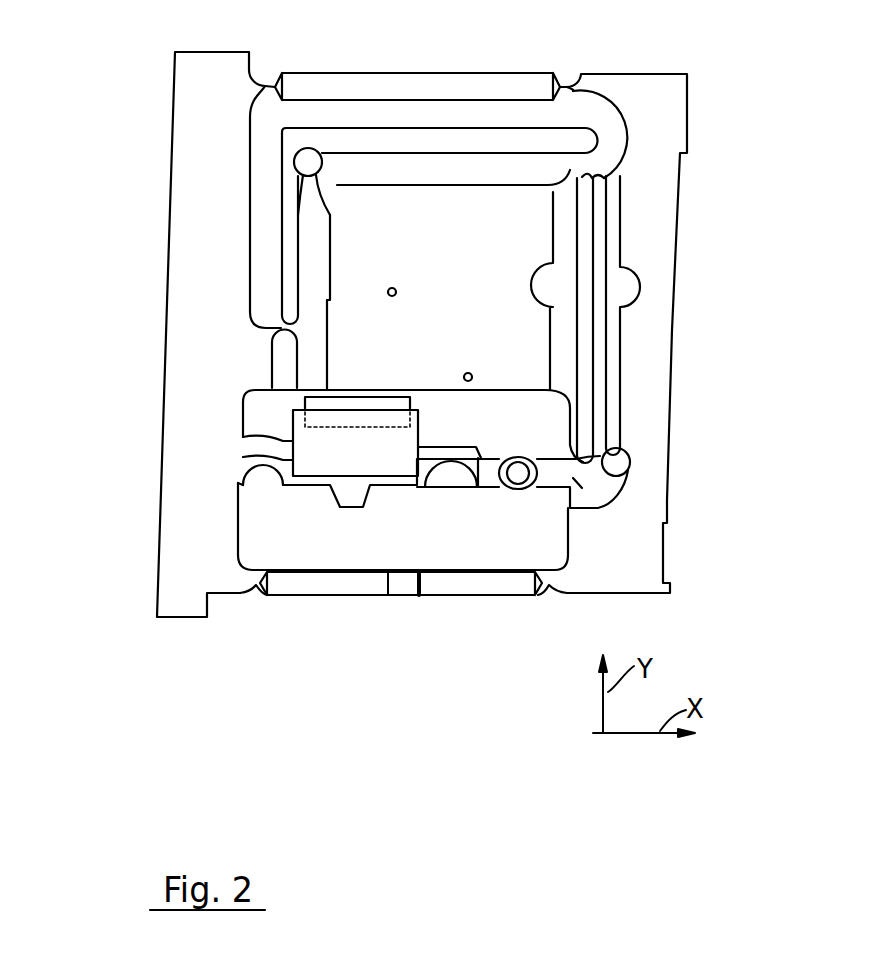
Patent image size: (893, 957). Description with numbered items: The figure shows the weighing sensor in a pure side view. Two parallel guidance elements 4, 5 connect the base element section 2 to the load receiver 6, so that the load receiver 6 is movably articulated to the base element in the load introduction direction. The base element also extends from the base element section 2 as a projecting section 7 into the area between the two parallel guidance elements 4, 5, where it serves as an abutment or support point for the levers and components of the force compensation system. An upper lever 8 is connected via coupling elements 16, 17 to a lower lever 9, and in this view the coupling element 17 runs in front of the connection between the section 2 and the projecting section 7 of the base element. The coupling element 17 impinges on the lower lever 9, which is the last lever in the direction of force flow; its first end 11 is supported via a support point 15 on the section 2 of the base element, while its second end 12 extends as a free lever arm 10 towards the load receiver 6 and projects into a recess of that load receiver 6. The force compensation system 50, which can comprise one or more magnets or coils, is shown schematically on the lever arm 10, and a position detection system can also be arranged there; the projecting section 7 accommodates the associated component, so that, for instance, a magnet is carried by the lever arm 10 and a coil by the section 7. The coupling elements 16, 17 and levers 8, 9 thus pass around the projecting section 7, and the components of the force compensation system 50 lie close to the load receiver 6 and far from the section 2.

The base element section 2 is at (665, 208).
The parallel guidance element 4 is at (393, 90).
The parallel guidance element 5 is at (292, 584).
The load receiver 6 is at (232, 161).
The projecting section 7 is at (512, 259).
The upper lever 8 is at (485, 142).
The lower lever 9 is at (413, 489).
The free lever arm 10 is at (314, 533).
The second end of lever 12 is at (262, 497).
The first end of lever 11 is at (578, 482).
The support point 15 is at (630, 460).
The coupling element 16 is at (290, 252).
The coupling element 17 is at (584, 356).
The force compensation system 50 is at (372, 466).